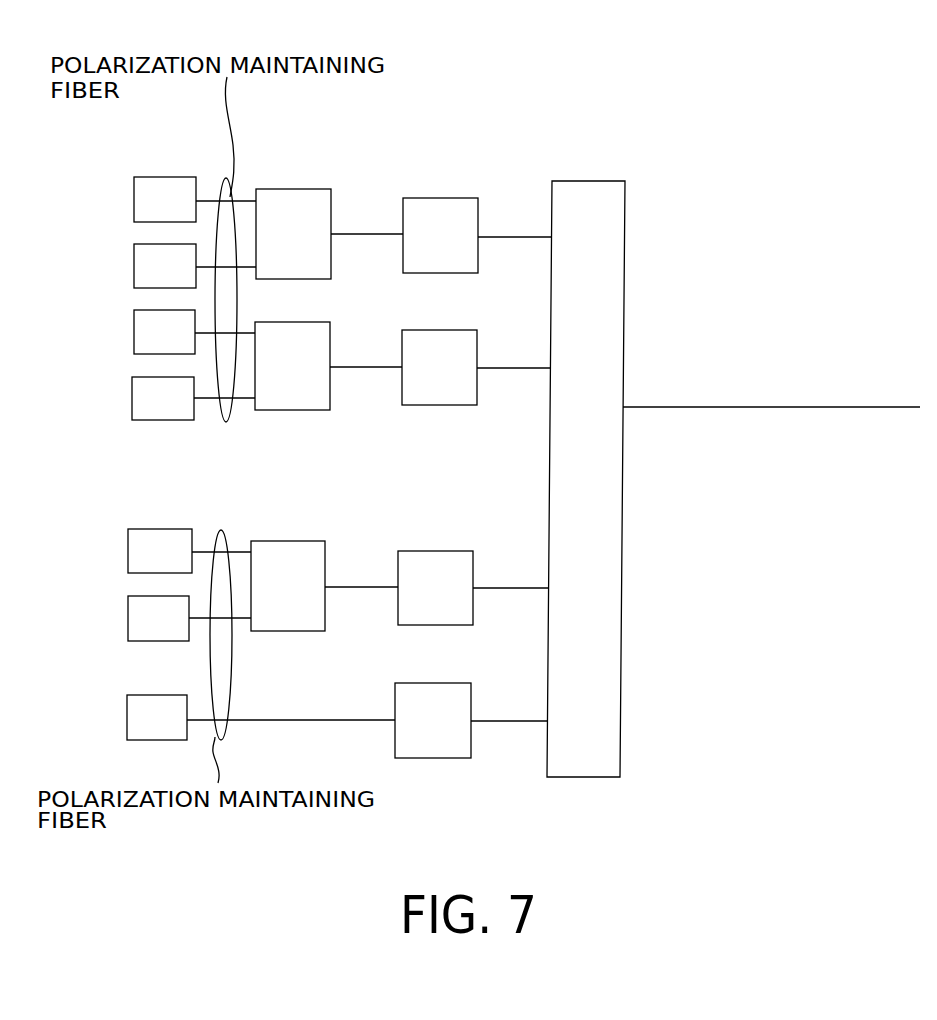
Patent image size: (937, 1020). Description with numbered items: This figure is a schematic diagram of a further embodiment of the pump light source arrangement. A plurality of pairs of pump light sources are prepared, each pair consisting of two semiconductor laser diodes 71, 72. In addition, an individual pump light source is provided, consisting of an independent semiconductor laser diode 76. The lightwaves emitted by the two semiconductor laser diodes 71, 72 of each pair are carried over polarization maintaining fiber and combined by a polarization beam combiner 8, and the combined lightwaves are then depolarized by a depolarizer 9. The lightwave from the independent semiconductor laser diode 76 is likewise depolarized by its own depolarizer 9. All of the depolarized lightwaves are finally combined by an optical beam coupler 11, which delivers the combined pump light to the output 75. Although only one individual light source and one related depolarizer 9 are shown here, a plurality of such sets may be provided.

The semiconductor laser diode 71 is at (152, 188).
The semiconductor laser diode 72 is at (152, 255).
The independent semiconductor laser diode 76 is at (142, 705).
The polarization beam combiner 8 is at (317, 330).
The depolarizer 9 is at (457, 338).
The optical beam coupler 11 is at (609, 202).
The output optical fiber 75 is at (760, 407).